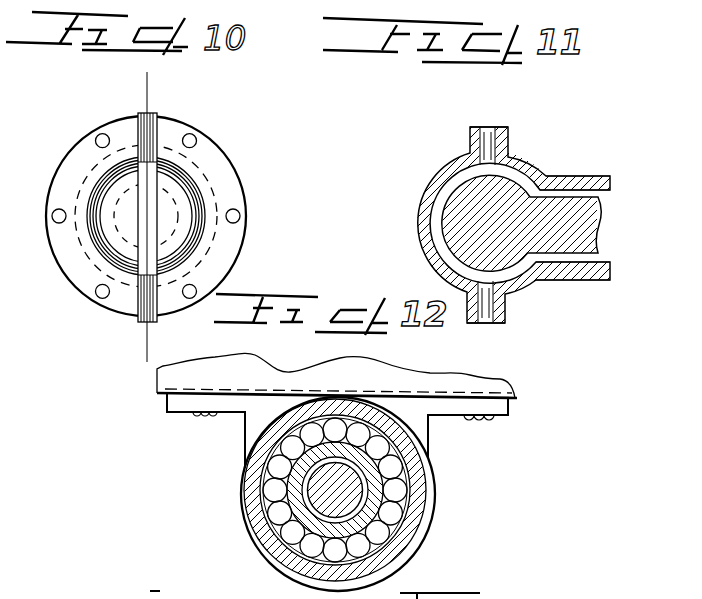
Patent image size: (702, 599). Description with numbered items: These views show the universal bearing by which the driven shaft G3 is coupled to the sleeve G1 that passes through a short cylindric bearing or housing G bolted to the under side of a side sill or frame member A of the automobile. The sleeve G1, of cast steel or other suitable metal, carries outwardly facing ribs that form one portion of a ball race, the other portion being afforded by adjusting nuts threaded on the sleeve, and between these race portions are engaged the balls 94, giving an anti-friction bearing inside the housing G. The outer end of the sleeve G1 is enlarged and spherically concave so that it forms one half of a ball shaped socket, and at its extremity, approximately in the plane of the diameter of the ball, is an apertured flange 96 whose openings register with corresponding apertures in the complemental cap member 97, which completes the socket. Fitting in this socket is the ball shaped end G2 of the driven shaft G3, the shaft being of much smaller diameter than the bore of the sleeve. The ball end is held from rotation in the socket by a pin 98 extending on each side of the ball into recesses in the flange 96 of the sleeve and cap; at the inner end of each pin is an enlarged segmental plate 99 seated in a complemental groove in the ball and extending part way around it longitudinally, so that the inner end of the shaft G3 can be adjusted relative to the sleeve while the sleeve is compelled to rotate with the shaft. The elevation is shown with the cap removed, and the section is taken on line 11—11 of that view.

In FIG. 10, the section line 11 is at (160, 343).
In FIG. 10, the flange 96 is at (237, 199).
In FIG. 11, the flange 96 is at (498, 308).
In FIG. 11, the complemental cap member 97 is at (428, 253).
In FIG. 10, the pin 98 is at (145, 133).
In FIG. 11, the pin 98 is at (491, 128).
In FIG. 10, the enlarged segmental plate 99 is at (160, 172).
In FIG. 11, the enlarged segmental plate 99 is at (480, 173).
In FIG. 12, the cylindric bearing housing G is at (422, 427).
In FIG. 11, the sleeve G1 is at (610, 153).
In FIG. 12, the sleeve G1 is at (290, 477).
In FIG. 10, the ball shaped end G2 is at (175, 206).
In FIG. 11, the ball shaped end G2 is at (457, 216).
In FIG. 12, the driven shaft G3 is at (313, 500).
In FIG. 12, the balls 94 is at (458, 503).
In FIG. 12, the side sill A is at (472, 383).